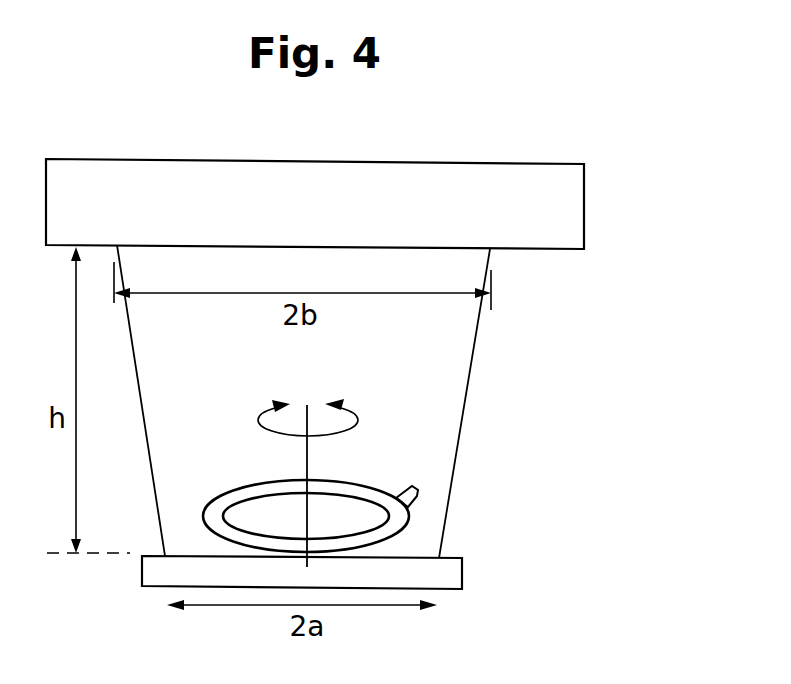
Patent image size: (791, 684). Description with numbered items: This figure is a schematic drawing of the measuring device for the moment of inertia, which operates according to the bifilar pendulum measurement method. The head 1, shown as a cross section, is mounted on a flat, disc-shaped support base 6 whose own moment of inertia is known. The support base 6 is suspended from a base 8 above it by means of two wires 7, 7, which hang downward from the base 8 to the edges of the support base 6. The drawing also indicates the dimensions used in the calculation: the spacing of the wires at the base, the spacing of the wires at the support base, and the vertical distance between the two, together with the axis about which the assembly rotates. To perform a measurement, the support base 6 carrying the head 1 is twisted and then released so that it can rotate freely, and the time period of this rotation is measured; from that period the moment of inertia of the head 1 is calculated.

The head 1 is at (357, 502).
The support base 6 is at (447, 573).
The wires 7 is at (142, 409).
The base 8 is at (577, 207).